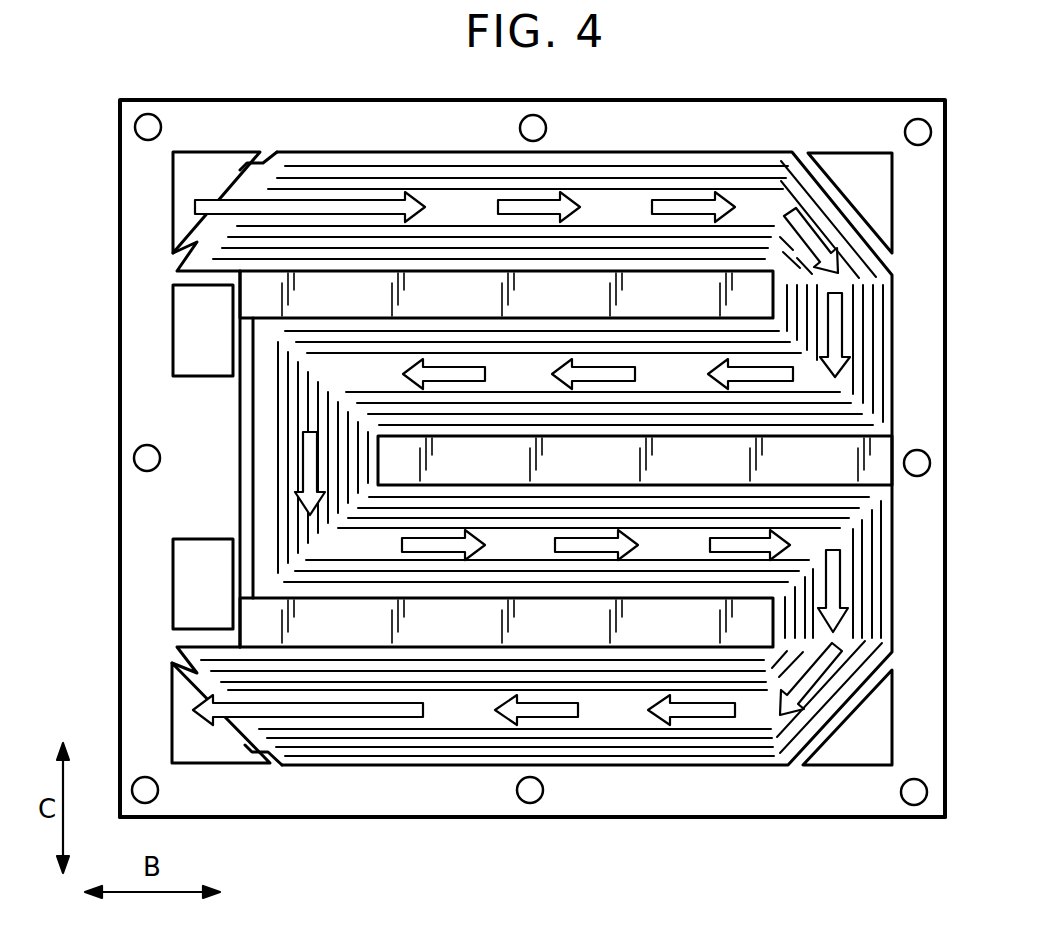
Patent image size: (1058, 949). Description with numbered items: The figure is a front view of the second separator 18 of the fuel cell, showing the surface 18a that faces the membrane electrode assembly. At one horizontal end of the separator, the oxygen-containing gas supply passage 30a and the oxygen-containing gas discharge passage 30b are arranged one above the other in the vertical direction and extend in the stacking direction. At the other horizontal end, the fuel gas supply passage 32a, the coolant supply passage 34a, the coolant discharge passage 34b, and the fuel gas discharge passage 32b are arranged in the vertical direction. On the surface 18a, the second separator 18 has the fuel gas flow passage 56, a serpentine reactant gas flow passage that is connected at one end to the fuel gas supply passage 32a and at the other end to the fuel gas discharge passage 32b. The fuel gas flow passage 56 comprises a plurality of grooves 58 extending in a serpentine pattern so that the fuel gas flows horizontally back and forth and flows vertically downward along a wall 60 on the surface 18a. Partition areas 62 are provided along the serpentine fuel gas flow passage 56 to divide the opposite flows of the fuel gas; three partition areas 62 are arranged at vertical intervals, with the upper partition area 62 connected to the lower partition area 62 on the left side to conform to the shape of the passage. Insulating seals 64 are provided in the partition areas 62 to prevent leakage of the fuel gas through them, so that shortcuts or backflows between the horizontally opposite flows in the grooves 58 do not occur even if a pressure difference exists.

The second separator 18 is at (745, 70).
The surface 18a is at (763, 800).
The oxygen-containing gas supply passage 30a is at (850, 203).
The oxygen-containing gas discharge passage 30b is at (847, 718).
The fuel gas supply passage 32a is at (216, 202).
The fuel gas discharge passage 32b is at (221, 713).
The coolant supply passage 34a is at (203, 330).
The coolant discharge passage 34b is at (203, 584).
The fuel gas flow passage 56 is at (517, 188).
The grooves 58 is at (657, 187).
The wall 60 is at (358, 152).
The partition areas 62 is at (598, 290).
The insulating seals 64 is at (500, 447).